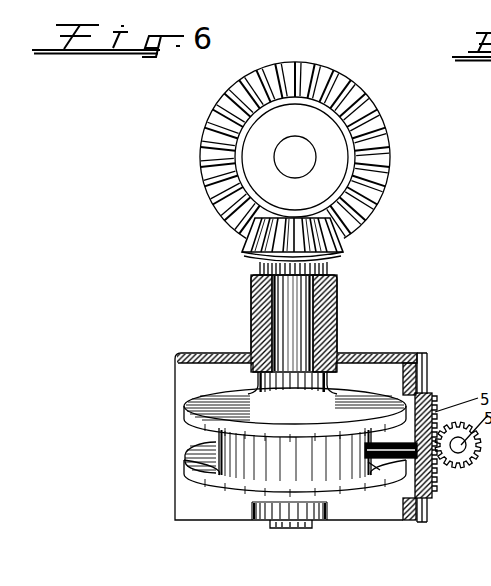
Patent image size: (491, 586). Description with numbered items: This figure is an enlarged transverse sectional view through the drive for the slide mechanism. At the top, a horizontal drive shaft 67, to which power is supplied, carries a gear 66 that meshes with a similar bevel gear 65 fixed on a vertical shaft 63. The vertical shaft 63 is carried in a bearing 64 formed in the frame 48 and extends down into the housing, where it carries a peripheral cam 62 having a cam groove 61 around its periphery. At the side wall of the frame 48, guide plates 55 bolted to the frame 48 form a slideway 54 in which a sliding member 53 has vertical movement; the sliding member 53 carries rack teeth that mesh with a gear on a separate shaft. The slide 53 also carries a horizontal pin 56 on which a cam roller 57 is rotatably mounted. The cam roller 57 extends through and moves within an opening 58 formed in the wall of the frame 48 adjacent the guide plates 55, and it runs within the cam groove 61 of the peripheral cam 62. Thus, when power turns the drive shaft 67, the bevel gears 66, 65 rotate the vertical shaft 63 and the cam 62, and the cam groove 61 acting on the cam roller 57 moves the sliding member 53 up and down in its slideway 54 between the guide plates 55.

The frame 48 is at (207, 353).
The sliding member 53 is at (437, 398).
The slideway 54 is at (425, 357).
The guide plates 55 is at (427, 510).
The horizontal pin 56 is at (408, 466).
The cam roller 57 is at (372, 472).
The opening 58 is at (400, 403).
The cam groove 61 is at (186, 462).
The peripheral cam 62 is at (190, 410).
The vertical shaft 63 is at (302, 309).
The bearing 64 is at (253, 288).
The bevel gear 65 is at (320, 246).
The gear 66 is at (370, 109).
The horizontal drive shaft 67 is at (295, 157).